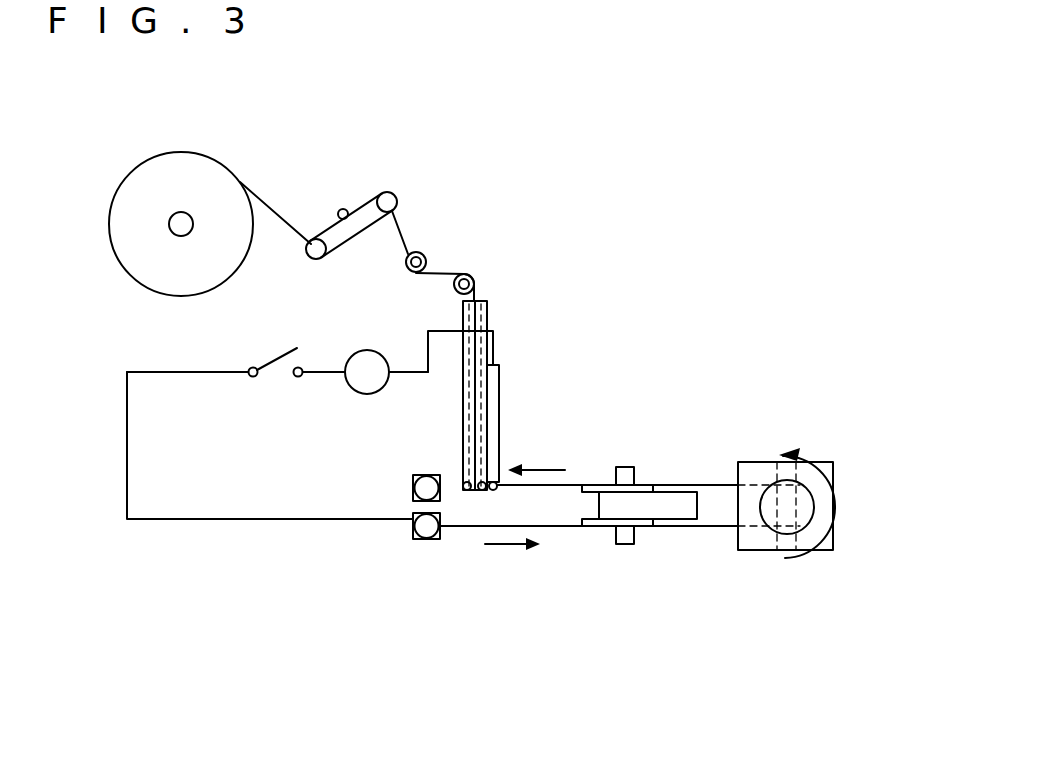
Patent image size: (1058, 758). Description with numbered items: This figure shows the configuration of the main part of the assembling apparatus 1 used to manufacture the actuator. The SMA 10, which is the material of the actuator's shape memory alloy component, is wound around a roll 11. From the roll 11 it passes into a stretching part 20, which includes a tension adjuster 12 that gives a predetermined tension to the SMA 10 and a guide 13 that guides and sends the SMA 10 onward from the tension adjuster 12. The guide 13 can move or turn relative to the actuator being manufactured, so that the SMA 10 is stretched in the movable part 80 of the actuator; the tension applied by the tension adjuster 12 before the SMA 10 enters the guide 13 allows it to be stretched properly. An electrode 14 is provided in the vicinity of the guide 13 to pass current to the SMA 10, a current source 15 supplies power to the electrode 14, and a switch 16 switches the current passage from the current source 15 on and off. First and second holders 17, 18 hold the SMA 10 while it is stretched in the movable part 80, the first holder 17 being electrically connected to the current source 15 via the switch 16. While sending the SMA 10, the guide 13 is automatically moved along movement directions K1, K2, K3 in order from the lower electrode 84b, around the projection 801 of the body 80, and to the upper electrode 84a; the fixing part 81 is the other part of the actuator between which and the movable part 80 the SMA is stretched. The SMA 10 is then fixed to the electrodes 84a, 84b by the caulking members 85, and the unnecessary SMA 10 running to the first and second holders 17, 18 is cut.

The assembling apparatus 1 is at (94, 125).
The SMA 10 is at (272, 200).
The roll 11 is at (182, 151).
The tension adjuster 12 is at (344, 198).
The guide 13 is at (482, 300).
The electrode 14 is at (498, 387).
The current source 15 is at (367, 350).
The switch 16 is at (273, 343).
The first holder 17 is at (424, 539).
The second holder 18 is at (426, 475).
The stretching part 20 is at (506, 200).
The movable part 80 is at (754, 462).
The projection 801 is at (772, 530).
The fixing part 81 is at (673, 470).
The upper electrode 84a is at (588, 485).
The lower electrode 84b is at (586, 527).
The caulking members 85 is at (626, 467).
The movement direction K1 is at (512, 546).
The movement direction K2 is at (838, 507).
The movement direction K3 is at (540, 467).